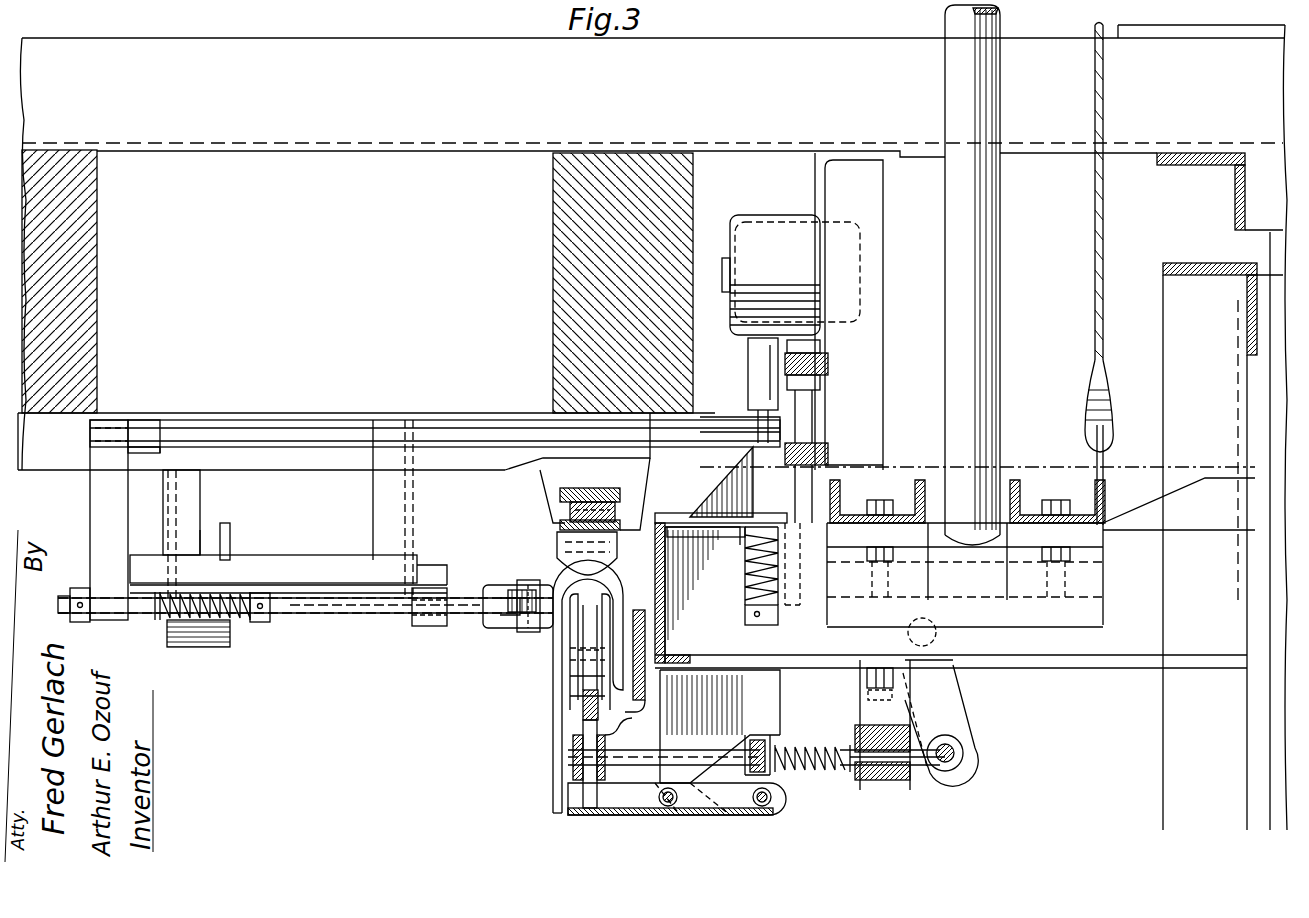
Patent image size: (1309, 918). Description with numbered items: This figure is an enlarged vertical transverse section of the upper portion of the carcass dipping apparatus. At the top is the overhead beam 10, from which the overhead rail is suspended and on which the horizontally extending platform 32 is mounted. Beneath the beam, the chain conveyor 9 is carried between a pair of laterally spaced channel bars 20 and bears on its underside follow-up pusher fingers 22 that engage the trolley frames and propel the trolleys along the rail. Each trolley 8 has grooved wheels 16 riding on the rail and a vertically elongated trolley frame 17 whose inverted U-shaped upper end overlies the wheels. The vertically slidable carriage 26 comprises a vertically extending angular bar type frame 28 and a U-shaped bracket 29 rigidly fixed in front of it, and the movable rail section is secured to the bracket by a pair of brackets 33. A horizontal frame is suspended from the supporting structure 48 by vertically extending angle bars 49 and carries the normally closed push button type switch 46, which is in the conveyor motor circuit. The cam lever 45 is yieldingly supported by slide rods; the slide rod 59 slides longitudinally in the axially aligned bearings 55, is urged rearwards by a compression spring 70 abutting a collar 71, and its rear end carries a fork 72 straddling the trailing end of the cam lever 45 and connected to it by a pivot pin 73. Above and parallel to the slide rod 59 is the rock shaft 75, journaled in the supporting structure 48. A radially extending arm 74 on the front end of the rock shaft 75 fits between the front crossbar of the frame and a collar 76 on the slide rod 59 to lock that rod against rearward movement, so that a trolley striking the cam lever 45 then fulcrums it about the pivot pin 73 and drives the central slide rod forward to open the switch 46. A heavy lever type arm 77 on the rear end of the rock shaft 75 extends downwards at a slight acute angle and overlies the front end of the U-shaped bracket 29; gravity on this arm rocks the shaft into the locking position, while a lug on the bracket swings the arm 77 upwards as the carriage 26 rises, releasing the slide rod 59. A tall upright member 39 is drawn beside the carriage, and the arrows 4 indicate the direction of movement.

The direction arrows 4 is at (66, 437).
The trolley 8 is at (544, 696).
The conveyor 9 is at (579, 489).
The overhead beam 10 is at (553, 294).
The grooved wheel 16 is at (576, 716).
The trolley frame 17 is at (577, 712).
The channel bar 20 is at (563, 506).
The pusher finger 22 is at (560, 550).
The carriage 26 is at (1020, 668).
The angular bar type frame 28 is at (1163, 389).
The U-shaped bracket 29 is at (673, 663).
The platform 32 is at (311, 48).
The bracket 33 is at (632, 718).
The column 39 is at (1001, 302).
The cam lever 45 is at (512, 598).
The push button type switch 46 is at (240, 549).
The supporting structure 48 is at (331, 468).
The angle bar 49 is at (202, 499).
The bearing 55 is at (425, 620).
The slide rod 59 is at (364, 617).
The compression spring 70 is at (243, 618).
The collar 71 is at (275, 616).
The fork 72 is at (500, 626).
The pivot pin 73 is at (522, 630).
The arm 74 is at (96, 494).
The rock shaft 75 is at (302, 432).
The collar 76 is at (80, 590).
The lever type arm 77 is at (820, 428).